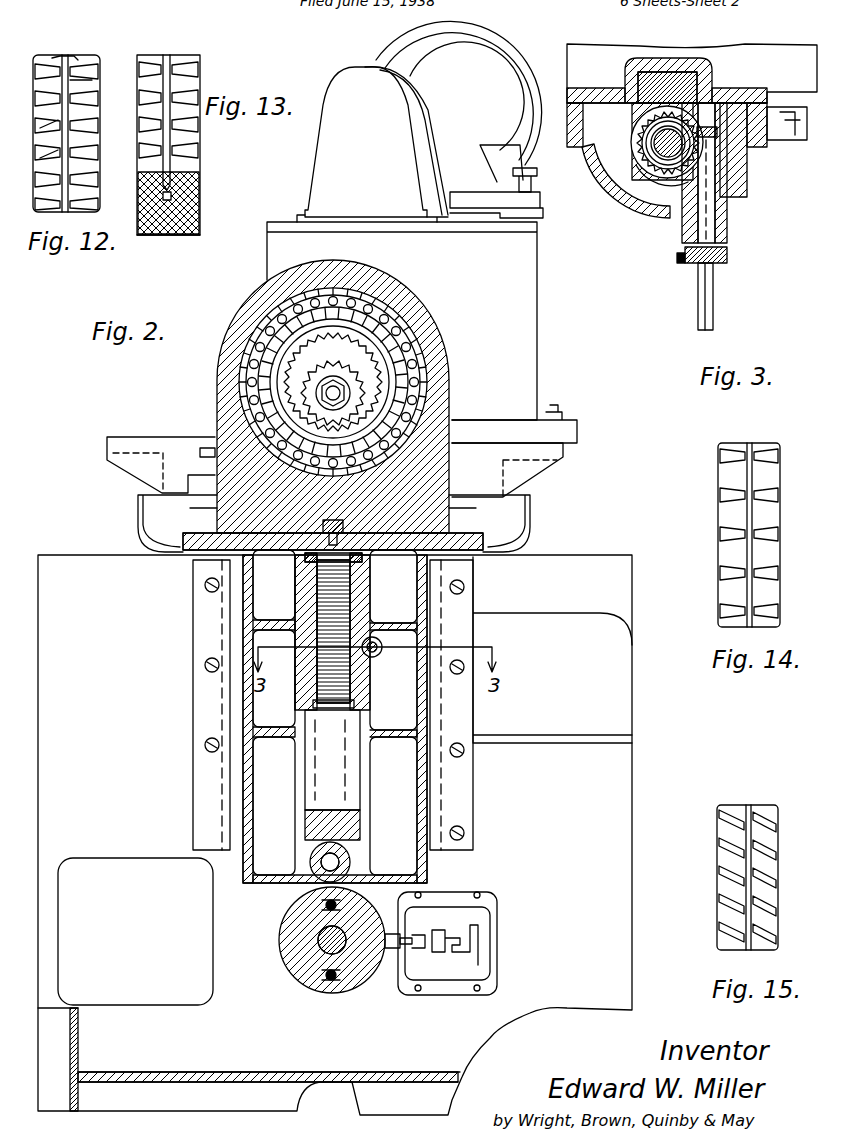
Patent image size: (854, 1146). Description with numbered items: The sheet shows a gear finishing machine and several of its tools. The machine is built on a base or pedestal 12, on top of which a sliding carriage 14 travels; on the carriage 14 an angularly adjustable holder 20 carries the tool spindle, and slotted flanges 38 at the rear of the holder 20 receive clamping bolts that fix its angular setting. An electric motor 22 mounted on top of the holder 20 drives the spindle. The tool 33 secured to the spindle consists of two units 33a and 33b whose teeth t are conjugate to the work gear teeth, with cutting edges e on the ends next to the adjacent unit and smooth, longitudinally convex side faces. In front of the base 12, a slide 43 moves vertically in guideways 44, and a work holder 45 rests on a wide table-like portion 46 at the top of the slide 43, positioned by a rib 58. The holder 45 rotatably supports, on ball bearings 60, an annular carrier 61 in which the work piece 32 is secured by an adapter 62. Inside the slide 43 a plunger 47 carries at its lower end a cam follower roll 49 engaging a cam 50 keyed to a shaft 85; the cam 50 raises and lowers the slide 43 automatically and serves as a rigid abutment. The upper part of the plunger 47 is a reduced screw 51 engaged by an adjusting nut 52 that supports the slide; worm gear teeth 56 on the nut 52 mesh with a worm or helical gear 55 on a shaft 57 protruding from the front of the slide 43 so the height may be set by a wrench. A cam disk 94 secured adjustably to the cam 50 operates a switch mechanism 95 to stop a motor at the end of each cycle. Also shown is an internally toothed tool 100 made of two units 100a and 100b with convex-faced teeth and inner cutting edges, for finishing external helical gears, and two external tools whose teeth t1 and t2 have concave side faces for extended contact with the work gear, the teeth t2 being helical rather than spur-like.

In FIG. 3, the base or pedestal 12 is at (596, 94).
In FIG. 2, the base or pedestal 12 is at (632, 800).
In FIG. 2, the sliding carriage 14 is at (540, 478).
In FIG. 2, the holder 20 is at (520, 278).
In FIG. 2, the electric motor 22 is at (512, 82).
In FIG. 2, the work piece 32 is at (382, 372).
In FIG. 12, the tool 33 is at (72, 148).
In FIG. 2, the tool 33 is at (362, 396).
In FIG. 12, the tool unit 33a is at (65, 170).
In FIG. 12, the tool unit 33b is at (60, 190).
In FIG. 2, the slotted flanges 38 is at (580, 418).
In FIG. 3, the slide 43 is at (600, 180).
In FIG. 2, the slide 43 is at (248, 725).
In FIG. 3, the guideways 44 is at (803, 142).
In FIG. 2, the guideways 44 is at (225, 690).
In FIG. 2, the holder 45 is at (220, 403).
In FIG. 2, the table-like portion 46 is at (195, 540).
In FIG. 3, the plunger 47 is at (646, 136).
In FIG. 2, the plunger 47 is at (335, 795).
In FIG. 2, the cam follower roll 49 is at (305, 870).
In FIG. 2, the cam 50 is at (285, 962).
In FIG. 2, the screw 51 is at (350, 672).
In FIG. 2, the adjusting nut 52 is at (355, 705).
In FIG. 3, the worm or helical gear 55 is at (722, 145).
In FIG. 2, the worm or helical gear 55 is at (376, 637).
In FIG. 3, the worm gear teeth 56 is at (640, 190).
In FIG. 2, the worm gear teeth 56 is at (300, 640).
In FIG. 3, the shaft 57 is at (715, 300).
In FIG. 2, the rib 58 is at (334, 528).
In FIG. 2, the ball bearings 60 is at (398, 345).
In FIG. 2, the annular carrier 61 is at (402, 328).
In FIG. 2, the adapter 62 is at (380, 310).
In FIG. 2, the shaft 85 is at (318, 940).
In FIG. 2, the cam disk 94 is at (336, 980).
In FIG. 2, the switch mechanism 95 is at (455, 930).
In FIG. 13, the internally toothed tool 100 is at (185, 75).
In FIG. 13, the tool unit 100a is at (158, 236).
In FIG. 13, the tool unit 100b is at (192, 190).
In FIG. 12, the cutting edges e is at (84, 66).
In FIG. 12, the teeth t is at (88, 90).
In FIG. 14, the teeth t1 is at (722, 530).
In FIG. 15, the teeth t2 is at (722, 848).